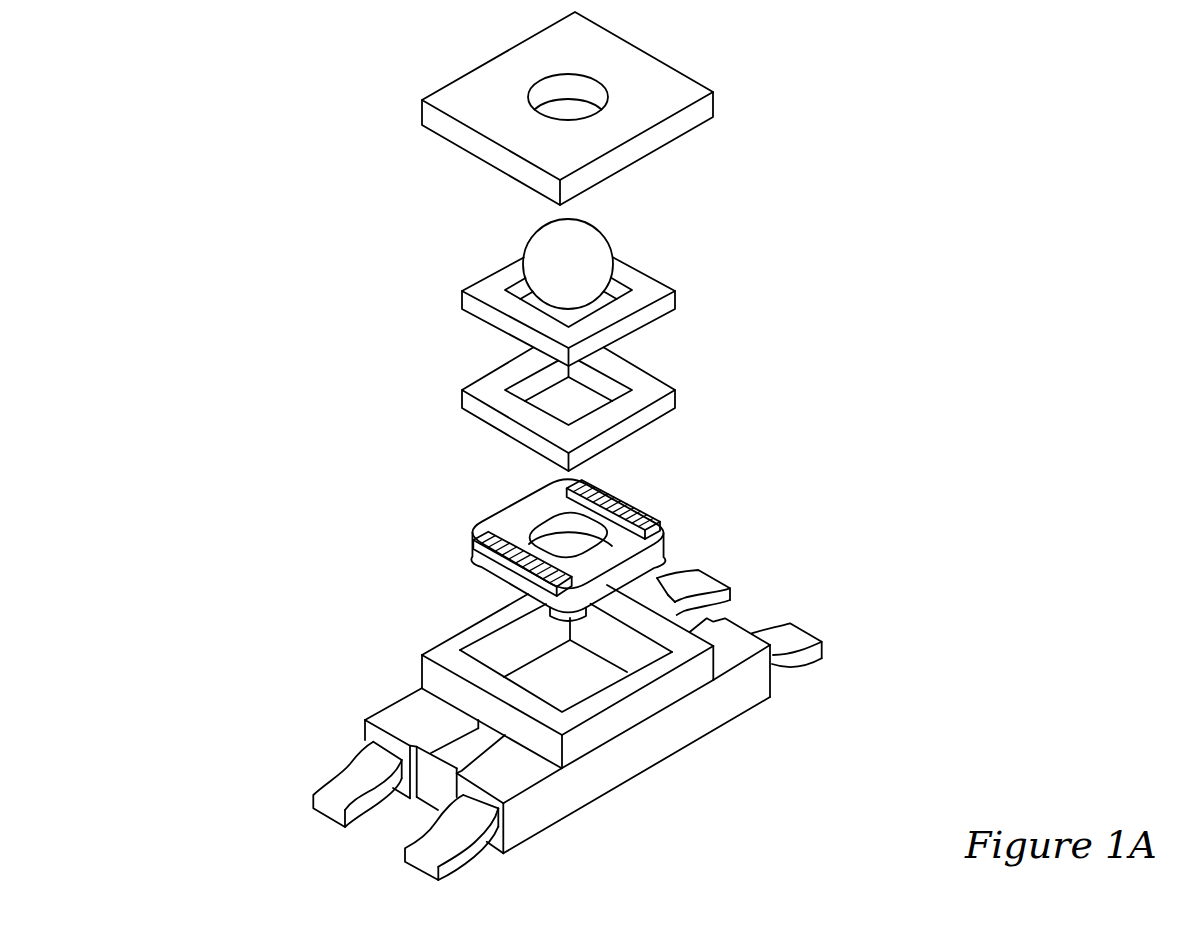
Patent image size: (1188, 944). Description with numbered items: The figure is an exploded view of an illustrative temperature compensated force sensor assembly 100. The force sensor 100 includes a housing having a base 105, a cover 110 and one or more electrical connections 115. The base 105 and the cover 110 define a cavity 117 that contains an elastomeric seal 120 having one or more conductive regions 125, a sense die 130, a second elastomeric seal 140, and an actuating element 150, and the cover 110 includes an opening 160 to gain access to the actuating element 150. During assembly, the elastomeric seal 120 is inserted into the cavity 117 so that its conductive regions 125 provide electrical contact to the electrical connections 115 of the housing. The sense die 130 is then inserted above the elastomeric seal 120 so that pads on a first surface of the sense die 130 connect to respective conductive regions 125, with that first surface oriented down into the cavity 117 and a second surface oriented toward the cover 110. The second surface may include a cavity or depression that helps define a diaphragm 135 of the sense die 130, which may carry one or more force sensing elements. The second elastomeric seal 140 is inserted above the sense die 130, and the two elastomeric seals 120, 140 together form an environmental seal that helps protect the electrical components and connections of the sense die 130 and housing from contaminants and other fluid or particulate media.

The temperature compensated force sensor assembly 100 is at (498, 446).
The base 105 is at (408, 712).
The cover 110 is at (553, 108).
The electrical connections 115 is at (352, 779).
The cavity 117 is at (590, 682).
The elastomeric seal 120 is at (525, 540).
The conductive regions 125 is at (497, 552).
The sense die 130 is at (565, 404).
The diaphragm 135 is at (582, 400).
The second elastomeric seal 140 is at (485, 288).
The actuating element 150 is at (555, 238).
The opening 160 is at (580, 108).